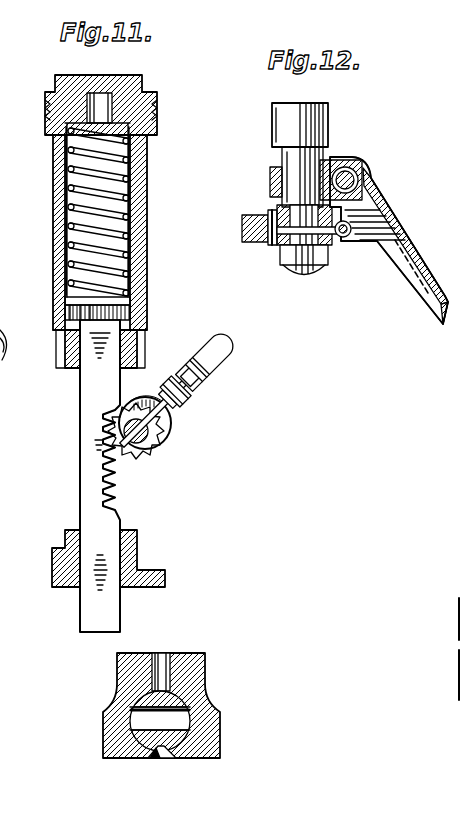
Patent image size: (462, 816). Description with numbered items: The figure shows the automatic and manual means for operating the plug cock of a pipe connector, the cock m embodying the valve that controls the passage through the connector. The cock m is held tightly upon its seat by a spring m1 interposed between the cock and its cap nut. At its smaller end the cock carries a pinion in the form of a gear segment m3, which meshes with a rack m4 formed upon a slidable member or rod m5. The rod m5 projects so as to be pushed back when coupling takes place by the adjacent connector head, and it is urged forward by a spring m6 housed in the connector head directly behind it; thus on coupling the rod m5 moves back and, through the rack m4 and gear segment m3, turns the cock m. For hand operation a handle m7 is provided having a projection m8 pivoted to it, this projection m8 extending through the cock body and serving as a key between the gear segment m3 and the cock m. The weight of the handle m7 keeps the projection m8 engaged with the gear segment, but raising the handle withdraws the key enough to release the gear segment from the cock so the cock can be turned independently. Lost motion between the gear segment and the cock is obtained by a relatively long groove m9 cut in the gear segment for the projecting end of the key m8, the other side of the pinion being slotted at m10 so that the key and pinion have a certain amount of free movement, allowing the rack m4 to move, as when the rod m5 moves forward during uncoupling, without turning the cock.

In FIG. 11, the cock m is at (125, 716).
In FIG. 11, the spring m1 is at (16, 364).
In FIG. 11, the gear segment m3 is at (162, 452).
In FIG. 12, the gear segment m3 is at (271, 244).
In FIG. 11, the rack m4 is at (110, 490).
In FIG. 12, the rack m4 is at (248, 218).
In FIG. 11, the slidable member or rod m5 is at (92, 604).
In FIG. 11, the spring m6 is at (66, 202).
In FIG. 11, the handle m7 is at (216, 366).
In FIG. 12, the handle m7 is at (395, 220).
In FIG. 11, the projection (key) m8 is at (172, 408).
In FIG. 12, the projection (key) m8 is at (286, 252).
In FIG. 11, the groove m9 is at (110, 431).
In FIG. 11, the slot m10 is at (173, 437).